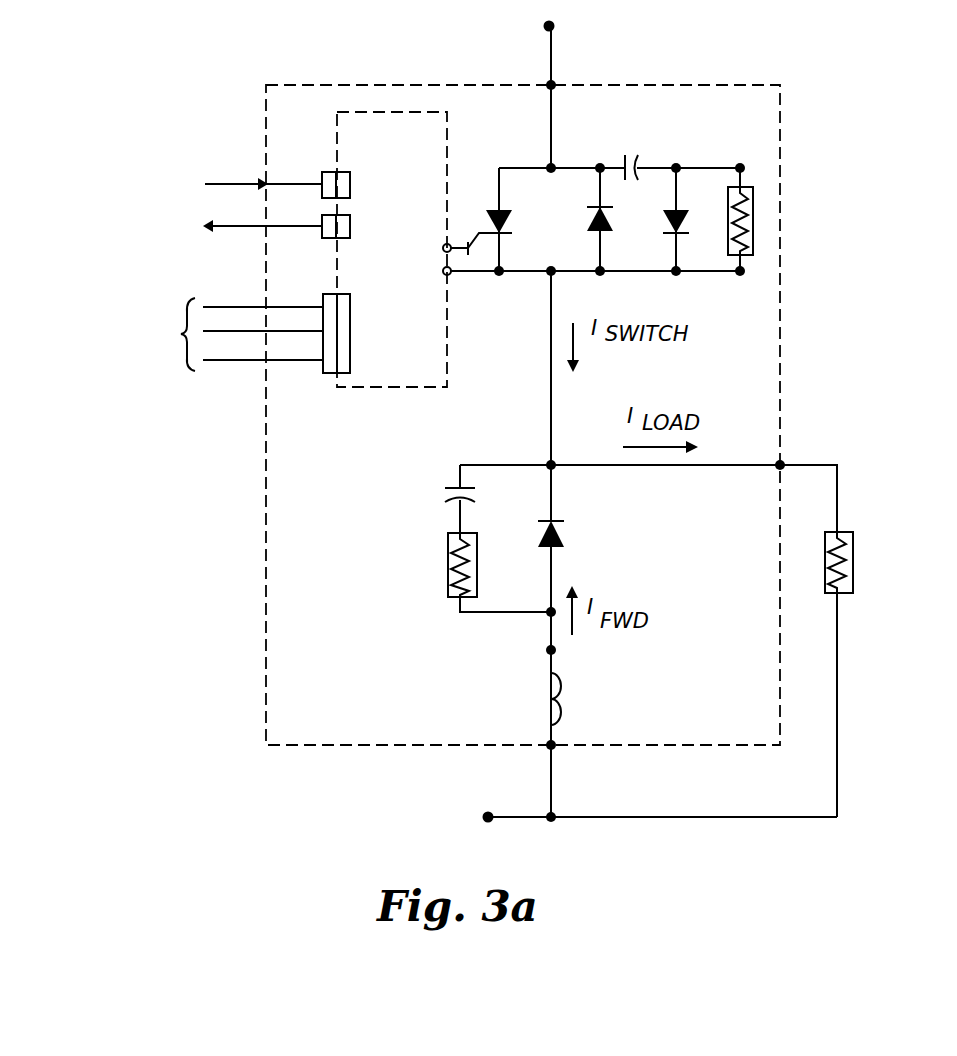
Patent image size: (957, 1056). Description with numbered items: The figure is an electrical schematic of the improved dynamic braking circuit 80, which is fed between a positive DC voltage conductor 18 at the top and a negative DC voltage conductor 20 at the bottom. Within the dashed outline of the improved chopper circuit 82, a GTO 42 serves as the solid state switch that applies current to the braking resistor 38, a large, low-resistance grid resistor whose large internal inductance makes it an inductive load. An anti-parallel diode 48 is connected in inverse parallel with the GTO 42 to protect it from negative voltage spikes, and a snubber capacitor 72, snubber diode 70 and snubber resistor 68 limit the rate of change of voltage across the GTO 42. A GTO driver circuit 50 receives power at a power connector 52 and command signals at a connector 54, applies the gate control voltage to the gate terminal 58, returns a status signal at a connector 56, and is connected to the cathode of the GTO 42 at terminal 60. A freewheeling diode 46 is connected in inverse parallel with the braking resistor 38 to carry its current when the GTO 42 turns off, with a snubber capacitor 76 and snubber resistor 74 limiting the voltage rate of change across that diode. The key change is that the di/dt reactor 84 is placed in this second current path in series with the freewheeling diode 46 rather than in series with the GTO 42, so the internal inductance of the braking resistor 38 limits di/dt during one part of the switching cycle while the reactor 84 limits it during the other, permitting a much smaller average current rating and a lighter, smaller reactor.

The positive DC voltage conductor 18 is at (554, 27).
The negative DC voltage conductor 20 is at (496, 782).
The braking resistor 38 is at (853, 550).
The GTO 42 is at (509, 222).
The freewheeling diode 46 is at (563, 541).
The anti-parallel diode 48 is at (588, 232).
The GTO driver circuit 50 is at (358, 388).
The power connector 52 is at (350, 345).
The connector 54 is at (350, 184).
The connector 56 is at (350, 226).
The gate terminal 58 is at (443, 249).
The terminal 60 is at (444, 274).
The snubber resistor 68 is at (754, 186).
The snubber diode 70 is at (664, 212).
The snubber capacitor 72 is at (624, 158).
The snubber resistor 74 is at (448, 567).
The snubber capacitor 76 is at (445, 490).
The improved dynamic braking circuit 80 is at (300, 831).
The improved chopper circuit 82 is at (782, 371).
The di/dt reactor 84 is at (558, 722).